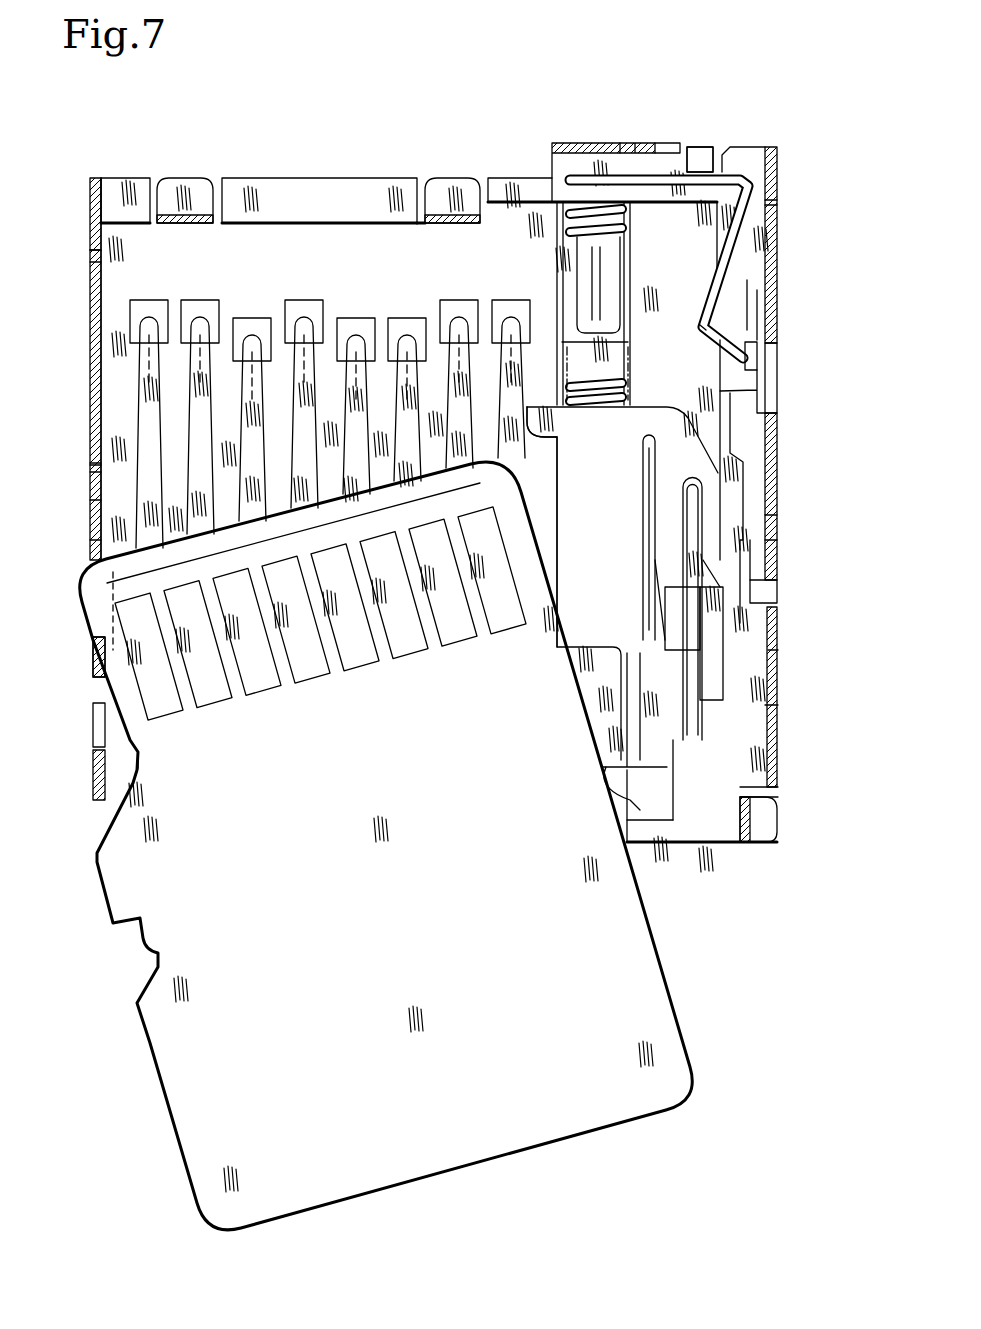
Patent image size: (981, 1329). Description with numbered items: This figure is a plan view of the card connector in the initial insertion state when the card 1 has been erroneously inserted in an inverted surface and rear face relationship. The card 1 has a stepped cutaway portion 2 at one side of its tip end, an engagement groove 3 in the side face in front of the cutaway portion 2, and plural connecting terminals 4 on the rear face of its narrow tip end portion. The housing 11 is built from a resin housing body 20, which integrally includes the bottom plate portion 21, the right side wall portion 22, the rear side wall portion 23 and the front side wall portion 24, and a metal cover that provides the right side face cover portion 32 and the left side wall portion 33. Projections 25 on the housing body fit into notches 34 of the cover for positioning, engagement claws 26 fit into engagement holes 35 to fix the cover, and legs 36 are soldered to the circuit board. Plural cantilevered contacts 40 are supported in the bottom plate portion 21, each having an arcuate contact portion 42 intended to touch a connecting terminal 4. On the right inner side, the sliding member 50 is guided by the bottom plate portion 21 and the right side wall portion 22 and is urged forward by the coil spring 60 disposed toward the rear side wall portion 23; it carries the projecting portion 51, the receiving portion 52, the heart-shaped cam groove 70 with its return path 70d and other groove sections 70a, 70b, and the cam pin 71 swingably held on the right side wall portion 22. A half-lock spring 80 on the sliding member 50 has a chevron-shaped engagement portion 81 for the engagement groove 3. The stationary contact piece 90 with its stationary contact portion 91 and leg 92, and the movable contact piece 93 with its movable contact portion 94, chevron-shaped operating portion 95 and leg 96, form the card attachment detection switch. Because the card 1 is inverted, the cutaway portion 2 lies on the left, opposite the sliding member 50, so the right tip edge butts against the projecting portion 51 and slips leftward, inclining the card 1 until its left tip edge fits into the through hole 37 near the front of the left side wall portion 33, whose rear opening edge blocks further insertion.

The card 1 is at (360, 929).
The cutaway portion 2 is at (140, 775).
The engagement groove 3 is at (148, 942).
The connecting terminals 4 is at (277, 683).
The housing 11 is at (614, 122).
The housing body 20 is at (390, 150).
The bottom plate portion 21 is at (331, 232).
The right side wall portion 22 is at (760, 500).
The rear side wall portion 23 is at (265, 186).
The front side wall portion 24 is at (646, 835).
The projections 25 is at (777, 515).
The engagement claws 26 is at (775, 222).
The right side face cover portion 32 is at (780, 752).
The left side wall portion 33 is at (95, 540).
The notches 34 is at (777, 537).
The engagement holes 35 is at (777, 205).
The legs 36 is at (183, 186).
The through hole 37 is at (95, 640).
The contacts 40 is at (243, 432).
The contact portion 42 is at (238, 420).
The sliding member 50 is at (657, 405).
The projecting portion 51 is at (560, 547).
The receiving portion 52 is at (555, 432).
The coil spring 60 is at (630, 230).
The cam groove 70 is at (699, 446).
The cam pin end 70a is at (690, 500).
The cam pin portion 70b is at (668, 600).
The return path 70d is at (720, 645).
The cam pin 71 is at (681, 780).
The half-lock spring 80 is at (635, 690).
The engagement portion 81 is at (605, 778).
The stationary contact piece 90 is at (745, 420).
The stationary contact portion 91 is at (758, 350).
The leg 92 is at (780, 590).
The movable contact piece 93 is at (738, 252).
The movable contact portion 94 is at (750, 325).
The operating portion 95 is at (705, 322).
The leg 96 is at (702, 160).